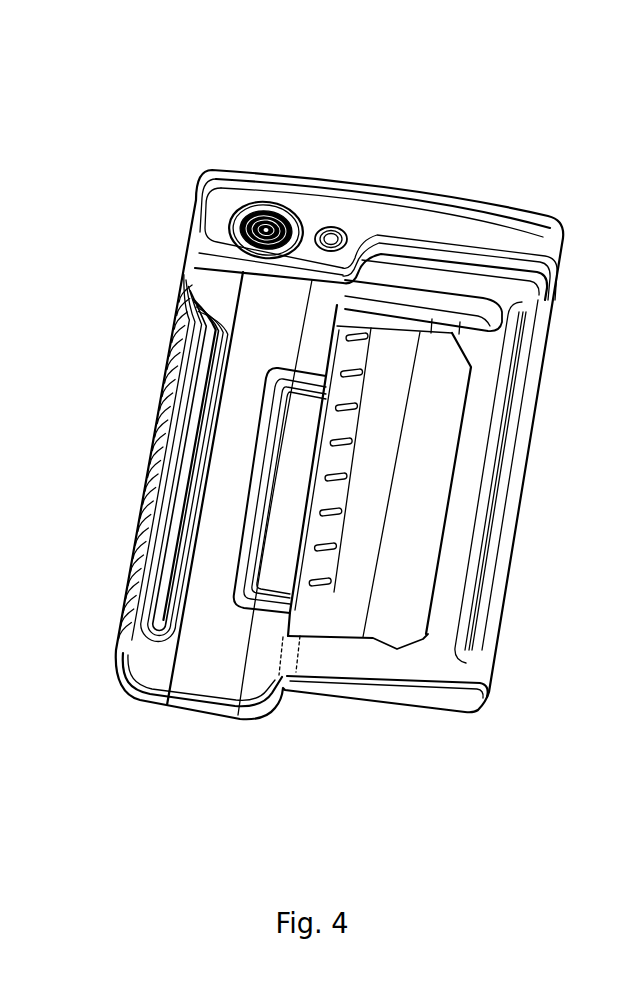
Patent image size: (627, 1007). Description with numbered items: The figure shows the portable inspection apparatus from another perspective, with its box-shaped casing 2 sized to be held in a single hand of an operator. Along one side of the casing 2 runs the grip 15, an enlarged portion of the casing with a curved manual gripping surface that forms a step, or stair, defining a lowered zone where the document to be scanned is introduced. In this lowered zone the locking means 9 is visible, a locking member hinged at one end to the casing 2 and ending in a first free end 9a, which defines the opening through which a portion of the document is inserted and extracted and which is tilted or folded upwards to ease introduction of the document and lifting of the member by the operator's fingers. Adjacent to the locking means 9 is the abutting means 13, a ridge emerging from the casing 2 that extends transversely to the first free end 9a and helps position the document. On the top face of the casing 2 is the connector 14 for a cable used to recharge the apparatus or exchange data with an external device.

The casing 2 is at (205, 665).
The locking means 9 is at (397, 558).
The first free end 9a is at (456, 470).
The abutting means 13 is at (416, 303).
The connector 14 is at (264, 212).
The grip 15 is at (152, 455).